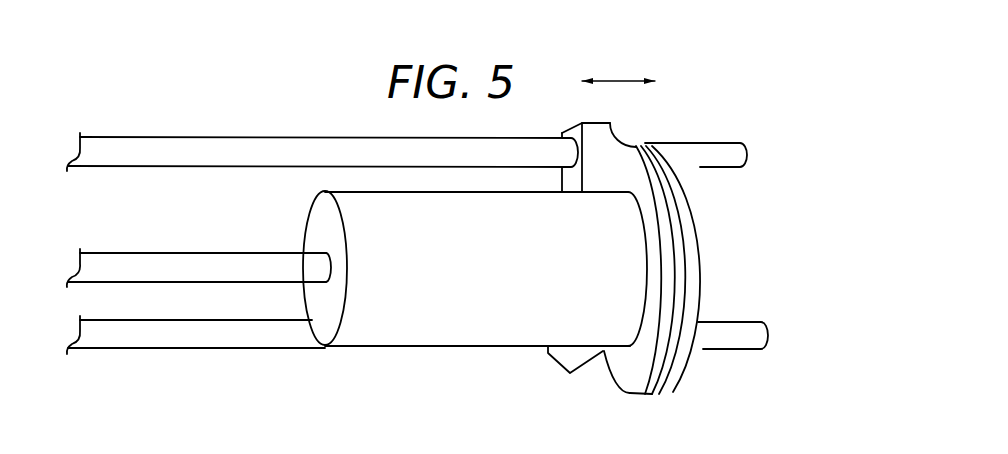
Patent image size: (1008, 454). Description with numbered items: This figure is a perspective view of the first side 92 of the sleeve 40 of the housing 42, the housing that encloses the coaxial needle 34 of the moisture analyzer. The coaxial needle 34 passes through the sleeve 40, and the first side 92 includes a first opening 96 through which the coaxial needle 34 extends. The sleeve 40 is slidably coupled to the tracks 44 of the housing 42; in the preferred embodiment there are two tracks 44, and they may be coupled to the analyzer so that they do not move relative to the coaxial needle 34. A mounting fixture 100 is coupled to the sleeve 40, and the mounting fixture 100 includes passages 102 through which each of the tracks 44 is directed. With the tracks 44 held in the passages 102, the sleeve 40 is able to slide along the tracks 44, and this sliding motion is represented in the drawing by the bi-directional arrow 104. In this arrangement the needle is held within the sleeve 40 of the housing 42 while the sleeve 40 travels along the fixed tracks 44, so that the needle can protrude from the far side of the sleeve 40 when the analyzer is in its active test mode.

The coaxial needle 34 is at (132, 252).
The sleeve 40 is at (368, 222).
The housing 42 is at (798, 229).
The track 44 is at (138, 137).
The first side 92 is at (327, 324).
The first opening 96 is at (306, 283).
The mounting fixture 100 is at (603, 163).
The passages 102 is at (561, 173).
The bi-directional arrow 104 is at (617, 81).